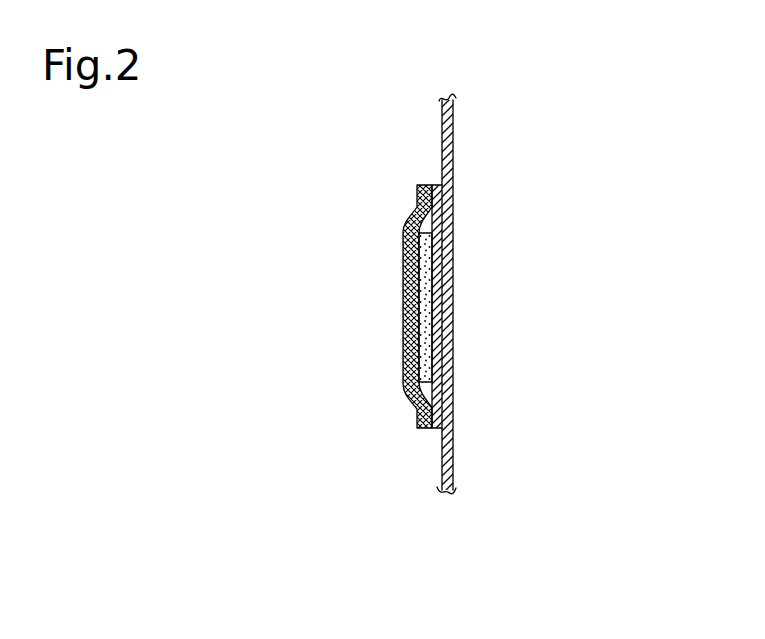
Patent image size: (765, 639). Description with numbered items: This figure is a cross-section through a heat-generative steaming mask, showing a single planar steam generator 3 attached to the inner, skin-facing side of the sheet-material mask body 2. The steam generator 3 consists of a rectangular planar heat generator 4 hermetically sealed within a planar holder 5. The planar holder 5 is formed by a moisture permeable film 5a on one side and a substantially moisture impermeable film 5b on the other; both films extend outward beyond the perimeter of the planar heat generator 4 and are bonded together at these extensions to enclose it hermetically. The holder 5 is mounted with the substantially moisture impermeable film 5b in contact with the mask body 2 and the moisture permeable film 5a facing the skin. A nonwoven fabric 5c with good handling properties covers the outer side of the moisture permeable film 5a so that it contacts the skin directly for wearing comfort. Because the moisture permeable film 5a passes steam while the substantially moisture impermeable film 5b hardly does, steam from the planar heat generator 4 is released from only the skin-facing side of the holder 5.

The mask body 2 is at (452, 129).
The steam generator 3 is at (373, 327).
The planar heat generator 4 is at (415, 317).
The planar holder 5 is at (373, 389).
The moisture permeable film 5a is at (428, 428).
The substantially moisture impermeable film 5b is at (440, 428).
The nonwoven fabric 5c is at (415, 426).